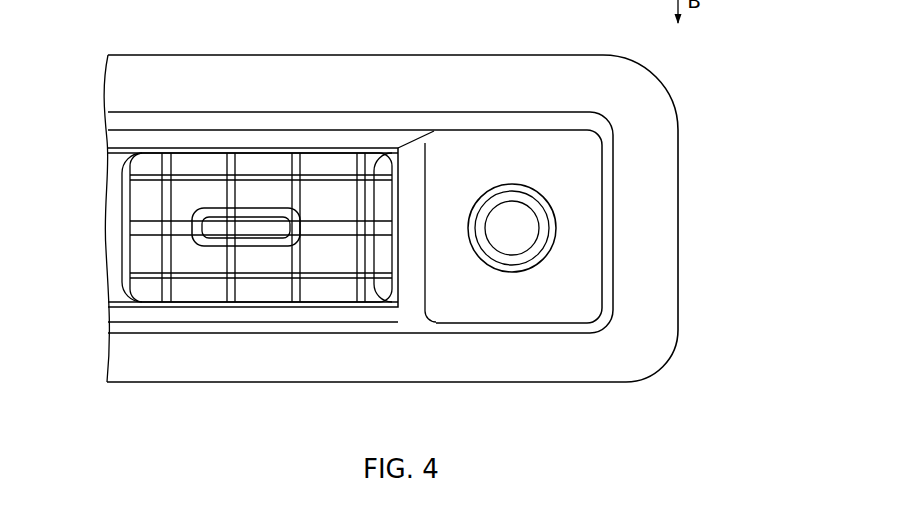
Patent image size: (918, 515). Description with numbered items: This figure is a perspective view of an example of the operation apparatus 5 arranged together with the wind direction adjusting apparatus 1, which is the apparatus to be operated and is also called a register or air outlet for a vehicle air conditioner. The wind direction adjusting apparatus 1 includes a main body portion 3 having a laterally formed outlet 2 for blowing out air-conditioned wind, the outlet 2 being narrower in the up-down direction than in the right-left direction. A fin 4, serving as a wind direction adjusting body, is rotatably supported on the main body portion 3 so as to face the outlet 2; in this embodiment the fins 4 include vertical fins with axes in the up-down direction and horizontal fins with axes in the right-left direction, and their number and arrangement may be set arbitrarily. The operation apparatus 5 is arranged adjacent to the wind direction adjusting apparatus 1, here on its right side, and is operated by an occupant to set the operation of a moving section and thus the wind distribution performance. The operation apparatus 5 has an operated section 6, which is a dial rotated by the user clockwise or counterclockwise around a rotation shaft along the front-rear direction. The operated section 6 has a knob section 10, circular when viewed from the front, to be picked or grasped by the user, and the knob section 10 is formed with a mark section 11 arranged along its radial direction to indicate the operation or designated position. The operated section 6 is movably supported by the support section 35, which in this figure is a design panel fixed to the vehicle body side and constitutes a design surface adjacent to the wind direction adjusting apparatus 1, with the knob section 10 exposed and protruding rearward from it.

The wind direction adjusting apparatus 1 is at (263, 110).
The outlet 2 is at (113, 292).
The main body portion 3 is at (122, 118).
The fin 4 is at (164, 300).
The operation apparatus 5 is at (601, 165).
The operated section 6 is at (518, 170).
The knob section 10 is at (490, 185).
The mark section 11 is at (513, 260).
The support section 35 is at (587, 146).